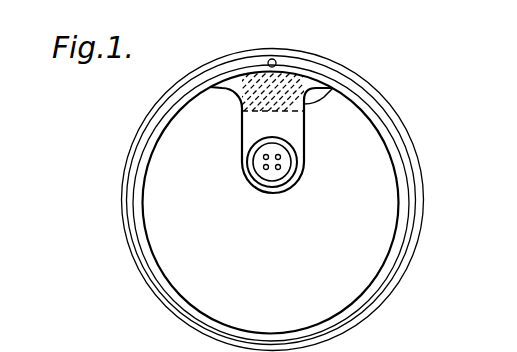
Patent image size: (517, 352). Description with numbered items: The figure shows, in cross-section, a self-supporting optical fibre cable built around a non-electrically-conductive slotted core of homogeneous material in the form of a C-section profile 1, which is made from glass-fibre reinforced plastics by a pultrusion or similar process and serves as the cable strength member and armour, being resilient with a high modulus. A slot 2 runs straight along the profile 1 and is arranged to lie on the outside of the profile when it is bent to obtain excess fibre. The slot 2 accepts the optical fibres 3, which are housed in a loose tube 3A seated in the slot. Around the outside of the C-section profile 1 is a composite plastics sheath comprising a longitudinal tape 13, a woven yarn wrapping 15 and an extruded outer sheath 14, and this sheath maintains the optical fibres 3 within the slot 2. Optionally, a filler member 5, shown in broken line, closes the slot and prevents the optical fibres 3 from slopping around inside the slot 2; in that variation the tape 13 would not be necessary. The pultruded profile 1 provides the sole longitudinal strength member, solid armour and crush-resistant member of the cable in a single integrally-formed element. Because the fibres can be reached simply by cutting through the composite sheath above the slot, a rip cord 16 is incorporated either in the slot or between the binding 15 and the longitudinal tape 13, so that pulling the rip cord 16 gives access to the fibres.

The C-section profile 1 is at (370, 132).
The slot 2 is at (246, 137).
The optical fibres 3 is at (266, 168).
The loose tube 3A is at (250, 153).
The filler member 5 is at (318, 96).
The longitudinal tape 13 is at (400, 160).
The extruded outer sheath 14 is at (418, 217).
The woven yarn wrapping 15 is at (412, 188).
The rip cord 16 is at (266, 59).